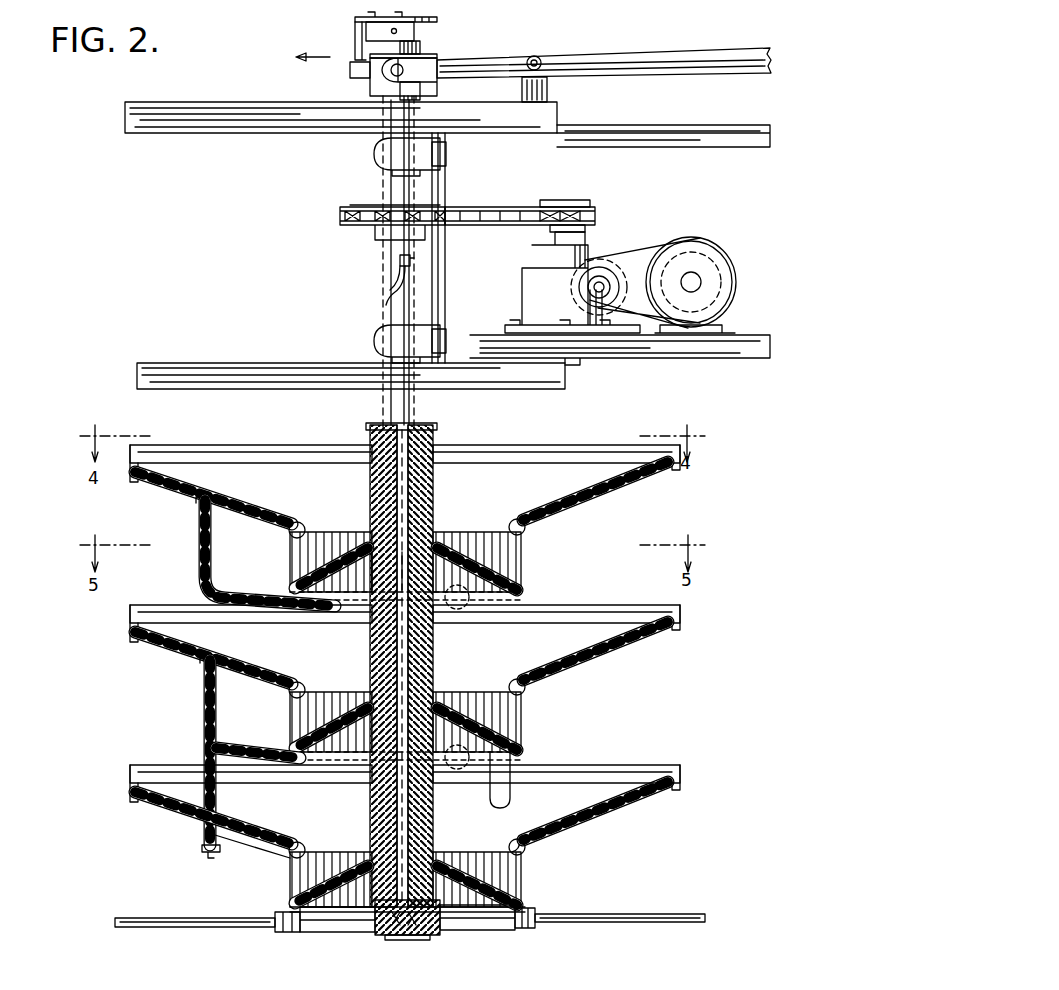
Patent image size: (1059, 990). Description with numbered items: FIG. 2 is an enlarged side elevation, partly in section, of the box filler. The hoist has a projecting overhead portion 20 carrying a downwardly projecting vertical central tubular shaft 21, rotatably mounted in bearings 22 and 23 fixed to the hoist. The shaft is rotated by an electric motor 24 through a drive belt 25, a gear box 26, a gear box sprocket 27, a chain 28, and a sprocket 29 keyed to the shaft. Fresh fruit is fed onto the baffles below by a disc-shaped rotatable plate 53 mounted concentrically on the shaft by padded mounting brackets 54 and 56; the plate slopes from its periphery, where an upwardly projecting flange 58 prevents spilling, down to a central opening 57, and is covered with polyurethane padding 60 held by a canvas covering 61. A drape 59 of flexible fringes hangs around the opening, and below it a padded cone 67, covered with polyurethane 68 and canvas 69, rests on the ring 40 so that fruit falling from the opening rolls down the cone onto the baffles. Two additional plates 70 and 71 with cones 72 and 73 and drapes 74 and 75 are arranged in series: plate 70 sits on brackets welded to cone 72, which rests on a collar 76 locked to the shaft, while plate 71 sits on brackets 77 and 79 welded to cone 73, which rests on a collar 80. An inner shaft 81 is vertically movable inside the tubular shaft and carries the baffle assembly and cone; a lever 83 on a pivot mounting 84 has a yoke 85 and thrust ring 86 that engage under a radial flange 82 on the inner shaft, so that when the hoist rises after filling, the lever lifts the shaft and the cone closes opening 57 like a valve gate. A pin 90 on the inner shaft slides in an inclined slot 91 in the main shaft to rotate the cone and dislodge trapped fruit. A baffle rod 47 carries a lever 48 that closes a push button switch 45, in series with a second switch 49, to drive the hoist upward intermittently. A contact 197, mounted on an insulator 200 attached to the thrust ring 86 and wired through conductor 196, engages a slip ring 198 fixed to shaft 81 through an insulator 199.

The projecting overhead portion 20 is at (262, 101).
The slip ring 198 is at (435, 18).
The insulator 199 is at (375, 33).
The contact 197 is at (362, 47).
The inner shaft 81 is at (420, 45).
The radial flange 82 is at (428, 55).
The thrust ring 86 is at (375, 85).
The insulator 200 is at (356, 74).
The yoke 85 is at (424, 88).
The conductor 196 is at (310, 60).
The lever 83 is at (600, 50).
The pivot mounting 84 is at (534, 56).
The central tubular shaft 21 is at (388, 180).
The bearing 22 is at (374, 154).
The bearing 23 is at (374, 341).
The sprocket 29 is at (360, 238).
The chain 28 is at (495, 207).
The gear box sprocket 27 is at (562, 196).
The pin 90 is at (400, 260).
The inclined slot 91 is at (390, 291).
The gear box 26 is at (522, 285).
The drive belt 25 is at (630, 262).
The electric motor 24 is at (728, 258).
The plate 71 is at (590, 445).
The drape 75 is at (289, 551).
The bracket 79 is at (522, 552).
The cone 73 is at (521, 582).
The bracket 77 is at (198, 549).
The collar 80 is at (372, 582).
The plate 70 is at (598, 600).
The drape 74 is at (289, 712).
The cone 72 is at (521, 746).
The collar 76 is at (362, 750).
The padded mounting bracket 54 is at (203, 728).
The padded mounting bracket 56 is at (490, 796).
The central opening 57 is at (514, 840).
The rotatable plate 53 is at (622, 808).
The flange 58 is at (676, 763).
The canvas 69 is at (289, 880).
The drape 59 is at (523, 866).
The cone 67 is at (478, 888).
The polyurethane padding 60 is at (252, 838).
The canvas covering 61 is at (275, 838).
The rod 47 is at (240, 927).
The ring 40 is at (289, 932).
The polyurethane 68 is at (325, 933).
The lever 48 is at (378, 934).
The push button switch 45 is at (398, 936).
The switch 49 is at (414, 942).